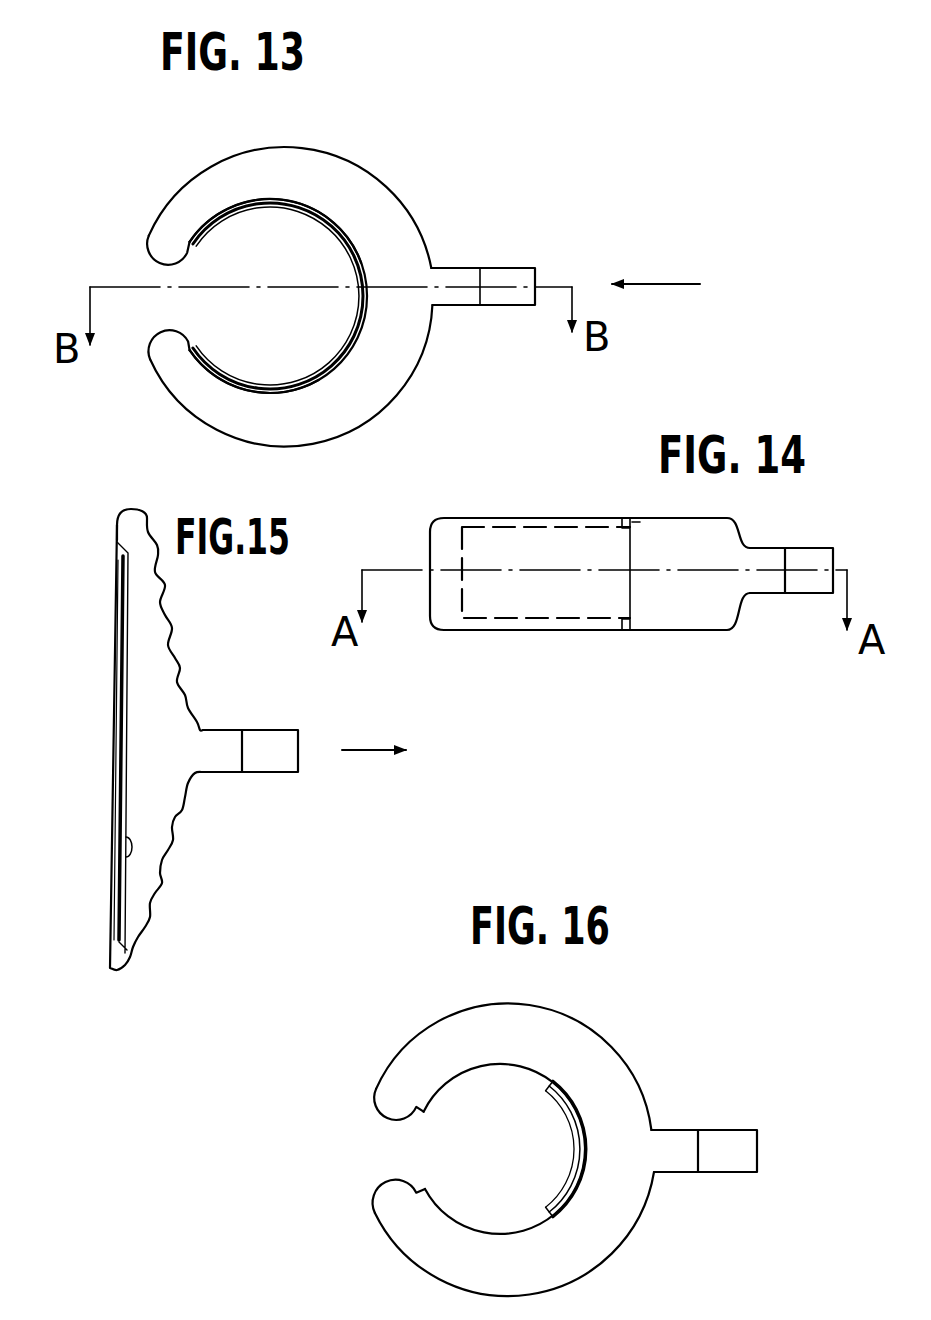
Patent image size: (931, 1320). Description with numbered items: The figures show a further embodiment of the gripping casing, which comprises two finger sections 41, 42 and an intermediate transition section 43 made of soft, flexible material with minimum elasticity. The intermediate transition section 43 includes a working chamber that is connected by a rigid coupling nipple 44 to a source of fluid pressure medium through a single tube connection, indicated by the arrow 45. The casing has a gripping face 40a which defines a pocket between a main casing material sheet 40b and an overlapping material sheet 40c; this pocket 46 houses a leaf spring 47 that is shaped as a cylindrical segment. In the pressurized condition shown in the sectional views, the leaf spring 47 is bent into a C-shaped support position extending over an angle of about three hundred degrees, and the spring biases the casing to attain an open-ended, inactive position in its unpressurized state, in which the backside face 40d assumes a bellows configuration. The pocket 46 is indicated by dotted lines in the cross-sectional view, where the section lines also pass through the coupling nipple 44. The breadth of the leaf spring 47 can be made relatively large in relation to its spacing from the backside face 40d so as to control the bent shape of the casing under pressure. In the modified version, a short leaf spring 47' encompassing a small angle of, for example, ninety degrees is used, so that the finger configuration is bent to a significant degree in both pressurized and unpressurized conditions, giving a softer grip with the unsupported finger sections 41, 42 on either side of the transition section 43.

In FIG. 13, the gripping face 40a is at (327, 232).
In FIG. 13, the main casing material sheet 40b is at (213, 372).
In FIG. 14, the main casing material sheet 40b is at (622, 522).
In FIG. 15, the main casing material sheet 40b is at (115, 771).
In FIG. 13, the overlapping material sheet 40c is at (247, 390).
In FIG. 14, the overlapping material sheet 40c is at (632, 522).
In FIG. 15, the overlapping material sheet 40c is at (117, 866).
In FIG. 13, the backside face 40d is at (396, 193).
In FIG. 15, the backside face 40d is at (180, 668).
In FIG. 13, the finger section 41 is at (165, 228).
In FIG. 16, the finger section 41 is at (390, 1085).
In FIG. 13, the finger section 42 is at (175, 370).
In FIG. 14, the finger section 42 is at (437, 617).
In FIG. 16, the finger section 42 is at (396, 1200).
In FIG. 14, the intermediate transition section 43 is at (705, 545).
In FIG. 16, the intermediate transition section 43 is at (622, 1103).
In FIG. 13, the coupling nipple 44 is at (465, 280).
In FIG. 14, the coupling nipple 44 is at (800, 549).
In FIG. 15, the coupling nipple 44 is at (218, 750).
In FIG. 16, the coupling nipple 44 is at (676, 1149).
In FIG. 13, the arrow 45 is at (665, 278).
In FIG. 15, the arrow 45 is at (352, 748).
In FIG. 13, the pocket 46 is at (312, 370).
In FIG. 14, the pocket 46 is at (505, 527).
In FIG. 15, the pocket 46 is at (118, 667).
In FIG. 13, the leaf spring 47 is at (278, 296).
In FIG. 15, the leaf spring 47 is at (86, 747).
In FIG. 16, the short leaf spring 47' is at (533, 1149).